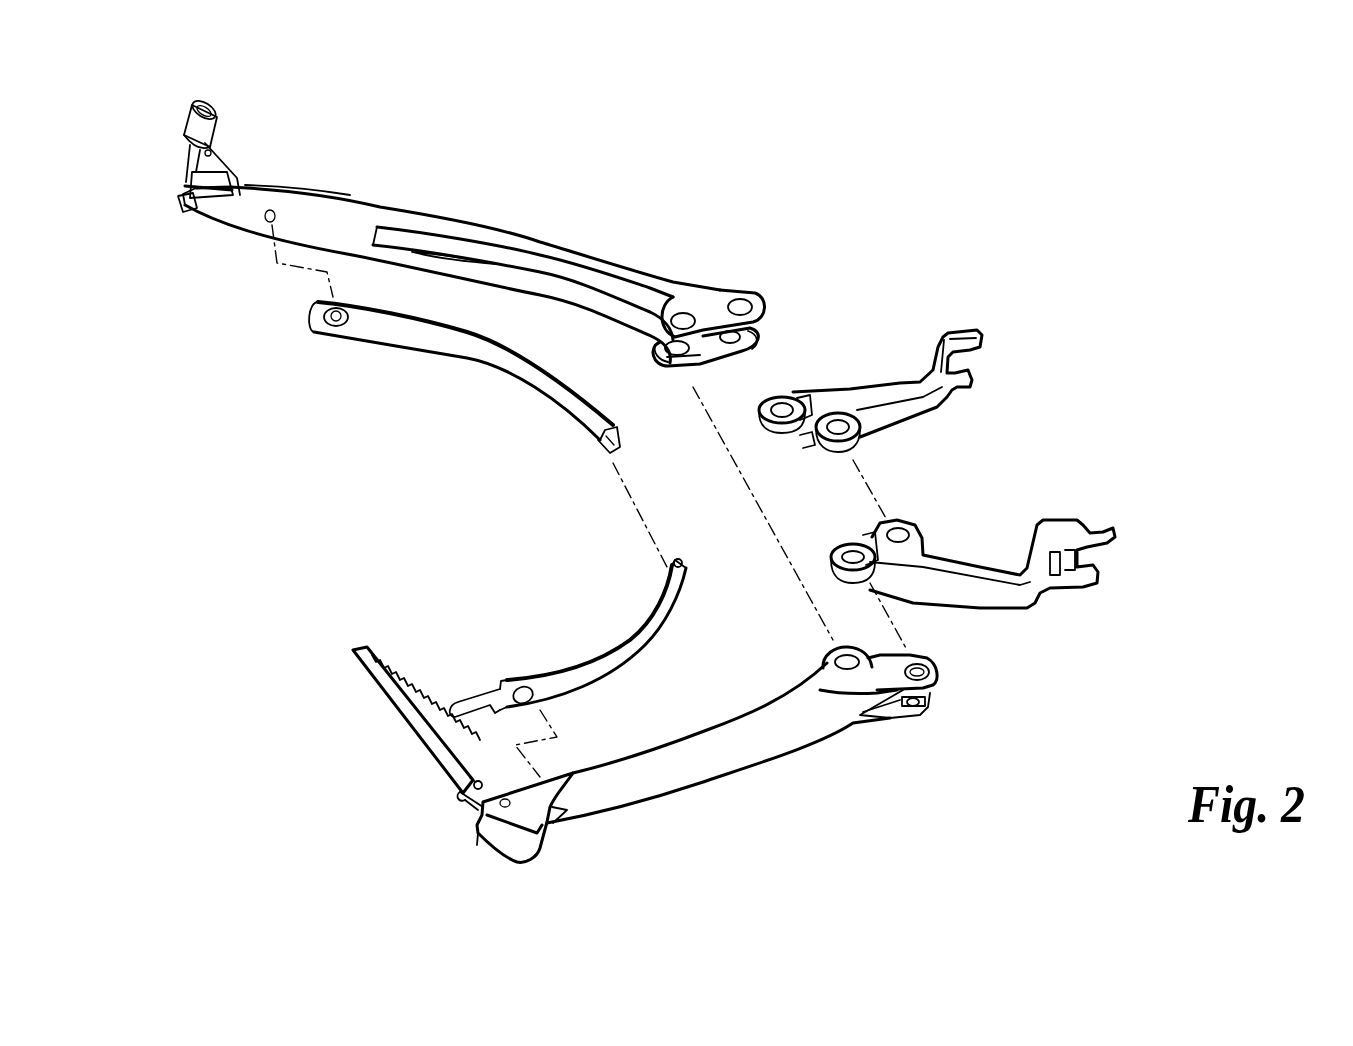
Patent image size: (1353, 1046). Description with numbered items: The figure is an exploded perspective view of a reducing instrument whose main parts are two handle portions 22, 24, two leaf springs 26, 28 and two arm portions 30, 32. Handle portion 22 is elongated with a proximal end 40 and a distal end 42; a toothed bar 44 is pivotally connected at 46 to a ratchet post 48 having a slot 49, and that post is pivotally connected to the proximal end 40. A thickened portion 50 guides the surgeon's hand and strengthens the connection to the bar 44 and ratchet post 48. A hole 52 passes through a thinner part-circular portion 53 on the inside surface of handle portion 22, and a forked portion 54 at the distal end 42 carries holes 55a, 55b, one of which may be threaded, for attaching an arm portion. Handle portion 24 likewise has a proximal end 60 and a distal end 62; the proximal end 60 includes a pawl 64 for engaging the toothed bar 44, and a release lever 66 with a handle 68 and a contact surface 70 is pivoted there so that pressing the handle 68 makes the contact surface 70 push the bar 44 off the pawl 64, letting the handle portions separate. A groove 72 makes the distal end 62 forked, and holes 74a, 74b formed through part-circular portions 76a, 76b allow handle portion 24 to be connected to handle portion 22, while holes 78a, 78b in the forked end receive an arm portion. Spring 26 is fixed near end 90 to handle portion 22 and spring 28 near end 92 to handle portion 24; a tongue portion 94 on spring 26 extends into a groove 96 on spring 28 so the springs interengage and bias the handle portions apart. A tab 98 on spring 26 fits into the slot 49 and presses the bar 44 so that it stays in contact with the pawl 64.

The handle portion 22 is at (790, 711).
The handle portion 24 is at (458, 207).
The spring 26 is at (580, 608).
The spring 28 is at (452, 391).
The arm portion 30 is at (968, 613).
The arm portion 32 is at (876, 382).
The proximal end 40 is at (506, 812).
The distal end 42 is at (887, 712).
The toothed bar 44 is at (385, 690).
The pivotal connection 46 is at (480, 780).
The ratchet post 48 is at (455, 793).
The slot 49 is at (487, 847).
The thickened portion 50 is at (540, 852).
The hole 52 is at (830, 655).
The part-circular portion 53 is at (850, 655).
The forked portion 54 is at (946, 693).
The hole 55a is at (918, 670).
The hole 55b is at (923, 698).
The proximal end 60 is at (245, 180).
The distal end 62 is at (705, 320).
The pawl 64 is at (190, 215).
The release lever 66 is at (165, 113).
The handle 68 is at (205, 100).
The contact surface 70 is at (190, 175).
The groove 72 is at (548, 285).
The hole 74a is at (680, 310).
The hole 74b is at (655, 345).
The part-circular portion 76a is at (710, 330).
The part-circular portion 76b is at (680, 368).
The hole 78a is at (745, 300).
The hole 78b is at (762, 335).
The end 90 is at (518, 690).
The end 92 is at (320, 340).
The tongue portion 94 is at (685, 560).
The groove 96 is at (600, 443).
The tab 98 is at (450, 705).